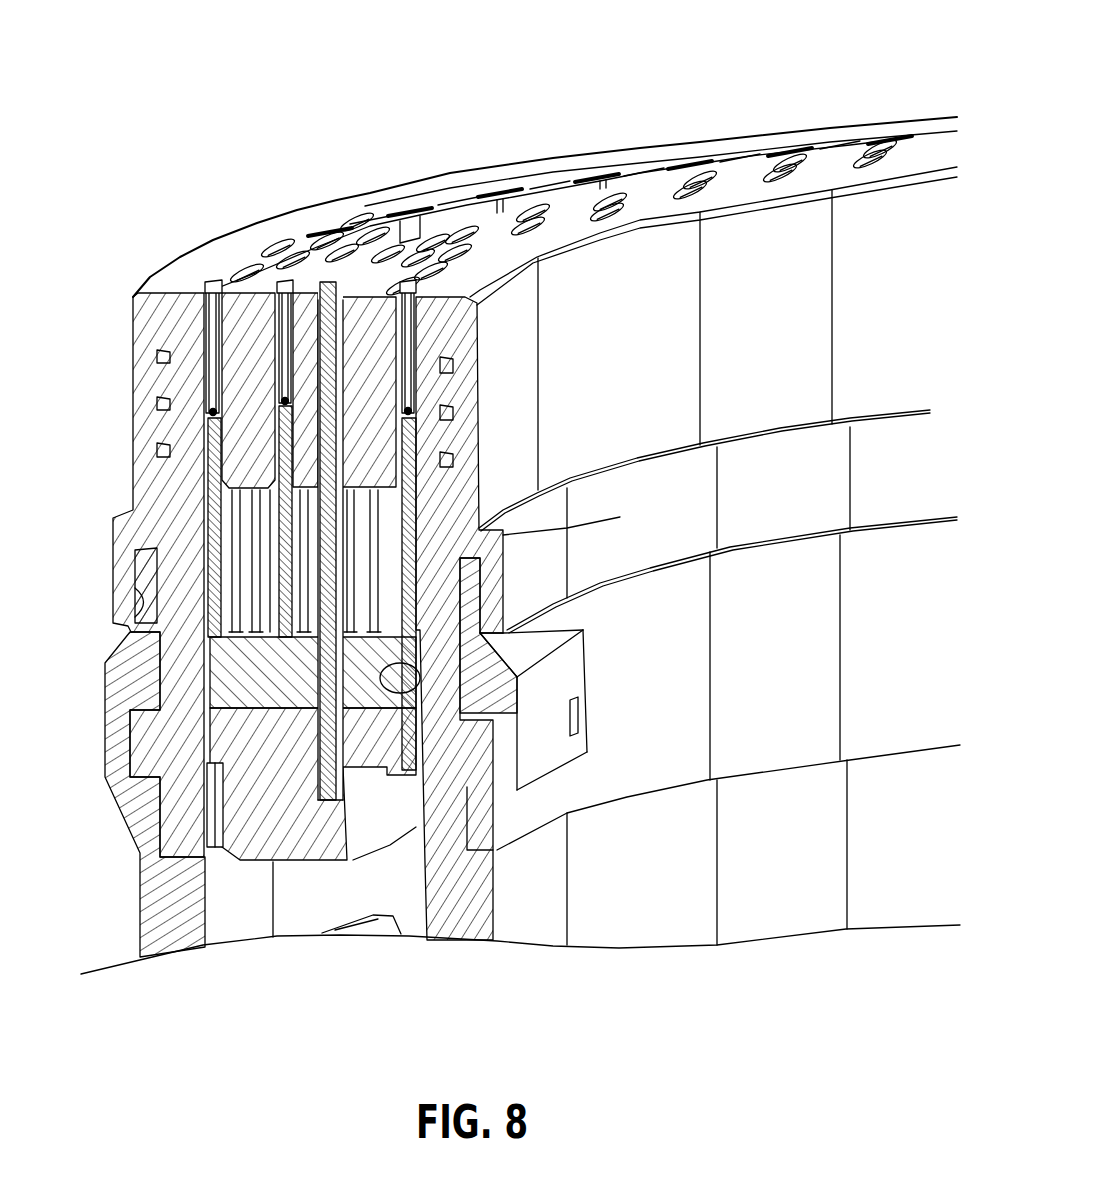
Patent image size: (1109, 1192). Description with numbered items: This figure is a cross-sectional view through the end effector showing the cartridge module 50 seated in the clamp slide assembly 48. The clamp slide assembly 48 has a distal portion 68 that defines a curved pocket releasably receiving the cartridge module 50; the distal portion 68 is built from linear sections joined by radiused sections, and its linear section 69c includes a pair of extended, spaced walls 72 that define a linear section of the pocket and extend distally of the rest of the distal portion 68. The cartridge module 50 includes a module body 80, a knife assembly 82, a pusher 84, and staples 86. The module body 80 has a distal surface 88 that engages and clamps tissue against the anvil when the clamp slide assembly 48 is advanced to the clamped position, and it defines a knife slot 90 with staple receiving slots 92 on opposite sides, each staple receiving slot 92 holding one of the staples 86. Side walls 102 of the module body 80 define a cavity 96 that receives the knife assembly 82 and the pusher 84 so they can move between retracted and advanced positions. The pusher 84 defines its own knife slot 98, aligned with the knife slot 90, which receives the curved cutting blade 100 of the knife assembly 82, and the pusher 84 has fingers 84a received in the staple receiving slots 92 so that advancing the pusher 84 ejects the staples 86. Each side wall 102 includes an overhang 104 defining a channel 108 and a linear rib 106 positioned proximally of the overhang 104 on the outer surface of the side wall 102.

The clamp slide assembly 48 is at (127, 838).
The cartridge module 50 is at (554, 72).
The distal portion 68 is at (507, 730).
The linear section 69c is at (105, 673).
The spaced walls 72 is at (147, 563).
The module body 80 is at (850, 128).
The knife assembly 82 is at (207, 753).
The pusher 84 is at (203, 677).
The fingers 84a is at (287, 437).
The staples 86 is at (287, 403).
The distal surface 88 is at (645, 155).
The knife slot 90 is at (770, 165).
The staple receiving slots 92 is at (327, 237).
The cavity 96 is at (213, 487).
The knife slot 98 is at (337, 413).
The curved cutting blade 100 is at (328, 520).
The side walls 102 is at (500, 317).
The overhang 104 is at (127, 582).
The linear rib 106 is at (137, 757).
The channel 108 is at (132, 627).